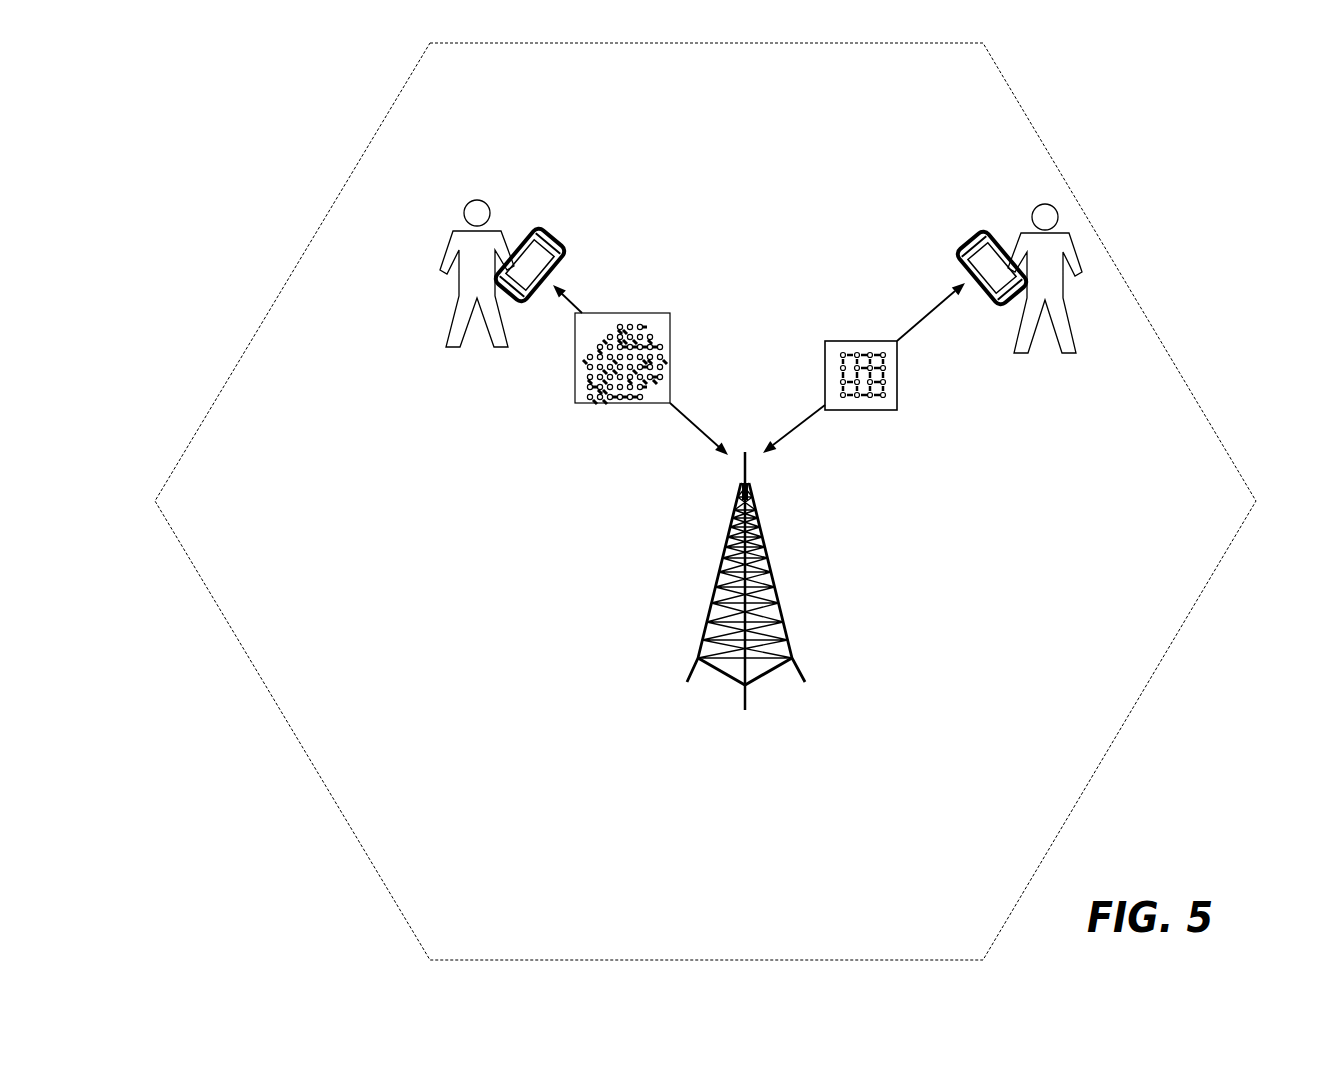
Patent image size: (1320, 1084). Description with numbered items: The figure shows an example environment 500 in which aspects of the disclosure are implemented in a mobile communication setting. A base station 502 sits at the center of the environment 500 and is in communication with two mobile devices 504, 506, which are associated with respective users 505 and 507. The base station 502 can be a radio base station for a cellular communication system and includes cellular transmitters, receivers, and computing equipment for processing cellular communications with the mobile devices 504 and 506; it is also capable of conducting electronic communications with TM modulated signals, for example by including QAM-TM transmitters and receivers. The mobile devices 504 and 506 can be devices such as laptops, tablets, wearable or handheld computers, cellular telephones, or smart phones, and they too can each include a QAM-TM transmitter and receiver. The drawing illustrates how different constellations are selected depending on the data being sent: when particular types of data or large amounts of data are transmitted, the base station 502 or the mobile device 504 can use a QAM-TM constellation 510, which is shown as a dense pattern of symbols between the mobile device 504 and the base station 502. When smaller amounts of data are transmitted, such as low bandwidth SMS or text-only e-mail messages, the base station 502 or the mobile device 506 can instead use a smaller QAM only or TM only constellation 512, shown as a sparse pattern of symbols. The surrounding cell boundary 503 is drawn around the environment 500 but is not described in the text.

The environment 500 is at (236, 156).
The base station 502 is at (777, 603).
The cell coverage area 503 is at (268, 322).
The mobile device 504 is at (538, 228).
The user 505 is at (452, 322).
The mobile device 506 is at (977, 230).
The user 507 is at (1068, 300).
The QAM-TM constellation 510 is at (576, 403).
The QAM only or TM only constellation 512 is at (855, 410).